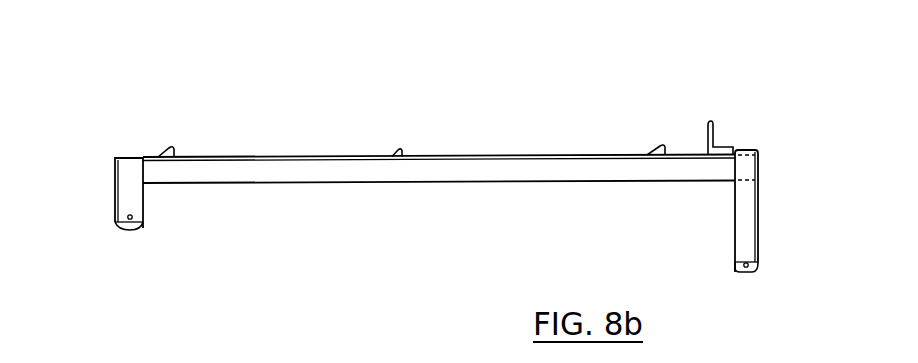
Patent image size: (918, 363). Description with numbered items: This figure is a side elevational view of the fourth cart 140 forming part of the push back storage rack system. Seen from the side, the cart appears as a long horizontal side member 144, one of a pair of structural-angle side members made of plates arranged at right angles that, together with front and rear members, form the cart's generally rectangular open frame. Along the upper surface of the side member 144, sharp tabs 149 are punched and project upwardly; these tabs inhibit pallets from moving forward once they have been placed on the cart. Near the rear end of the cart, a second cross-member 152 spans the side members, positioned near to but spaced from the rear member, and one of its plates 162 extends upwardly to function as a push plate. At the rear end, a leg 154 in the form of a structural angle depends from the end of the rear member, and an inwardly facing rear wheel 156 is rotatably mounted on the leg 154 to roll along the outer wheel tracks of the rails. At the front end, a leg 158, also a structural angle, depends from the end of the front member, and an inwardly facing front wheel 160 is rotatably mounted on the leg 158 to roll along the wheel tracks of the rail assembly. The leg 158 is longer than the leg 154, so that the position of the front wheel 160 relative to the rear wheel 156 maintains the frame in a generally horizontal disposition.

The fourth cart 140 is at (623, 98).
The side member 144 is at (440, 173).
The sharp tab 149 is at (398, 153).
The second cross-member 152 is at (713, 108).
The leg 154 is at (755, 220).
The rear wheel 156 is at (740, 271).
The leg 158 is at (126, 180).
The front wheel 160 is at (133, 229).
The plate 162 is at (714, 133).